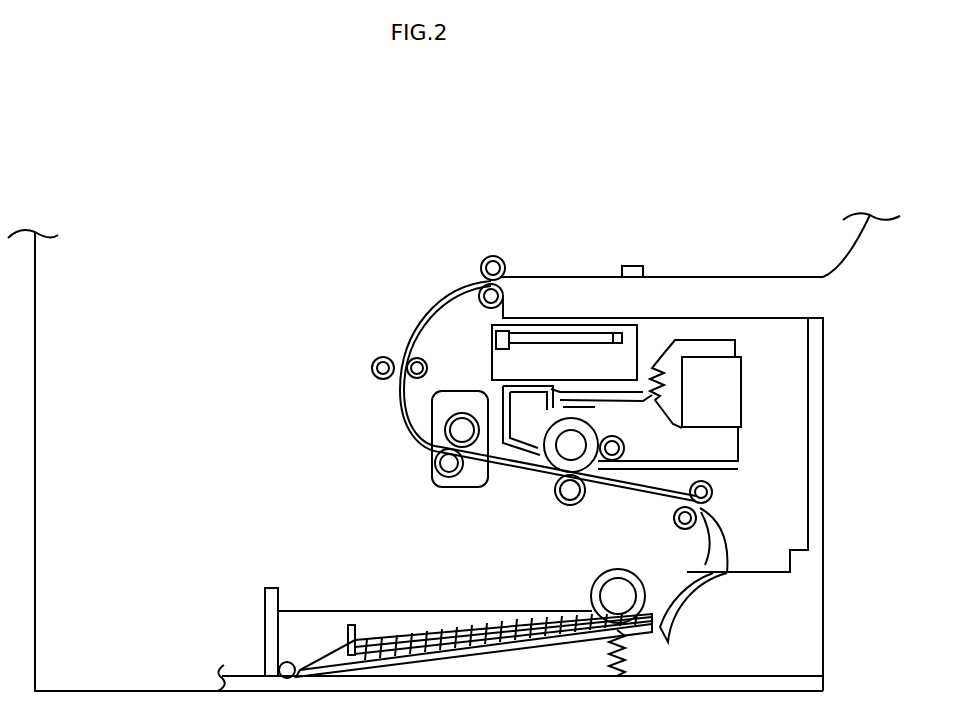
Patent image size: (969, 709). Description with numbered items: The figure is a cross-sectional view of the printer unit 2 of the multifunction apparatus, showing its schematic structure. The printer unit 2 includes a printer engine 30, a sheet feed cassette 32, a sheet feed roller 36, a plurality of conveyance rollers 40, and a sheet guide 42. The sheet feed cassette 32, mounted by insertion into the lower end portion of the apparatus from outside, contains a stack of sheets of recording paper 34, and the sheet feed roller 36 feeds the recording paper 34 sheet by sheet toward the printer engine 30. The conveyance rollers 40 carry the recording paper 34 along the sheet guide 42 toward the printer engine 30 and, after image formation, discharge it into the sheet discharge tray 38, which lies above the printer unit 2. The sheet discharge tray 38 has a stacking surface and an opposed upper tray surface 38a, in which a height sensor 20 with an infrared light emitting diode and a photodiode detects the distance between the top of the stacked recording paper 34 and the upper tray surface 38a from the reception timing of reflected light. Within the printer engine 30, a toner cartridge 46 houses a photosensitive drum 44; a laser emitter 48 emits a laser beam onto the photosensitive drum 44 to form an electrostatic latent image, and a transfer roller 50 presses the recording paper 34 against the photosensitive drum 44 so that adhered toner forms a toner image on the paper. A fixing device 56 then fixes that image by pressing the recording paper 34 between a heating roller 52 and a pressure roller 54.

The printer unit 2 is at (735, 157).
The height sensor 20 is at (634, 265).
The printer engine 30 is at (766, 392).
The sheet feed cassette 32 is at (797, 628).
The recording paper 34 is at (441, 622).
The sheet feed roller 36 is at (608, 570).
The sheet discharge tray 38 is at (782, 318).
The upper tray surface 38a is at (697, 281).
The conveyance rollers 40 is at (488, 256).
The sheet guide 42 is at (432, 302).
The photosensitive drum 44 is at (603, 420).
The toner cartridge 46 is at (737, 441).
The laser emitter 48 is at (495, 362).
The transfer roller 50 is at (571, 506).
The heating roller 52 is at (462, 413).
The pressure roller 54 is at (432, 486).
The fixing device 56 is at (472, 488).